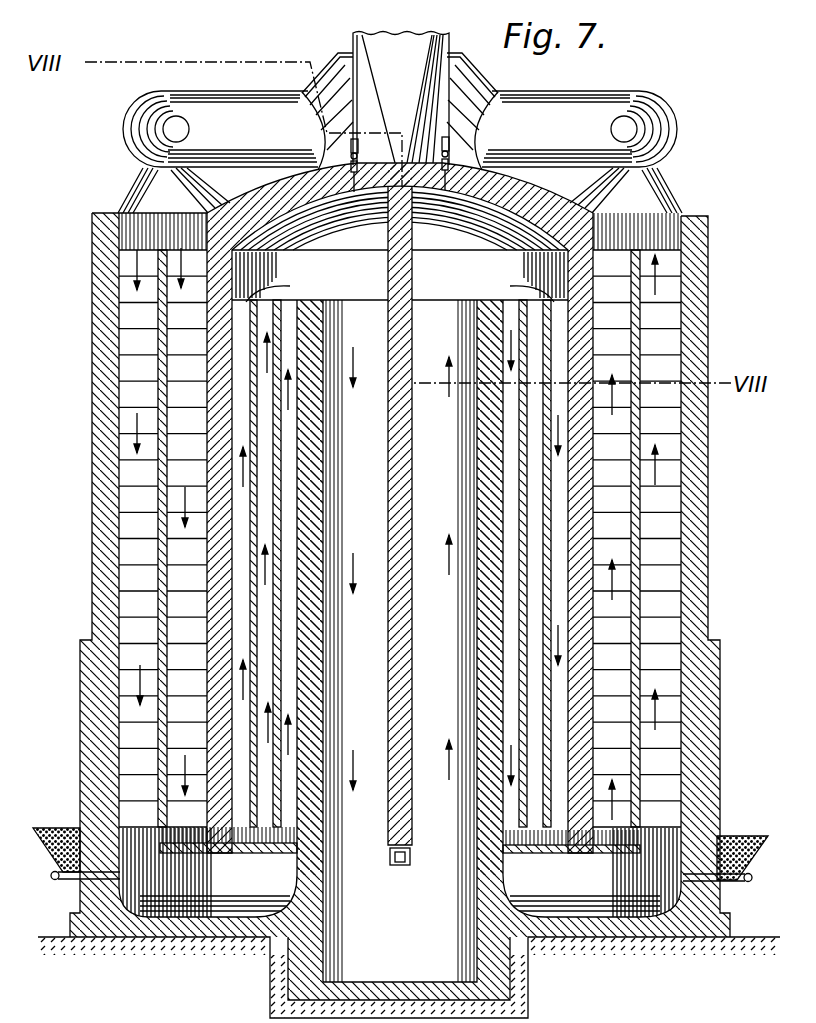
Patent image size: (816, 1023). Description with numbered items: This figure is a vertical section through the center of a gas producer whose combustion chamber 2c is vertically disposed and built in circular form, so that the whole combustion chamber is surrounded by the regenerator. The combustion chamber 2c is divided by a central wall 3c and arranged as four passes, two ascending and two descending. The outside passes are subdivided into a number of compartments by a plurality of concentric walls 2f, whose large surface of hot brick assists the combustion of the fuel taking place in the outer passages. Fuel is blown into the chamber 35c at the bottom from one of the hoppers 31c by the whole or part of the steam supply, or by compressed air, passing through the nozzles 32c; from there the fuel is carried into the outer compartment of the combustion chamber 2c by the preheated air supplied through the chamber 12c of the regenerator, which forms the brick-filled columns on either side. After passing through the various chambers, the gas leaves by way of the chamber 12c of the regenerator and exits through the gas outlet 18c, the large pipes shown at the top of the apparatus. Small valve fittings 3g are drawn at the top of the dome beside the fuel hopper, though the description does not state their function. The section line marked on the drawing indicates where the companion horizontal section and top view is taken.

The combustion chamber 2c is at (292, 697).
The concentric walls 2f is at (600, 637).
The wall 3c is at (403, 640).
The valve 3g is at (359, 151).
The chamber 12c is at (710, 579).
The gas outlet 18c is at (656, 133).
The hopper 31c is at (66, 834).
The nozzle 32c is at (65, 880).
The chamber 35c is at (603, 905).